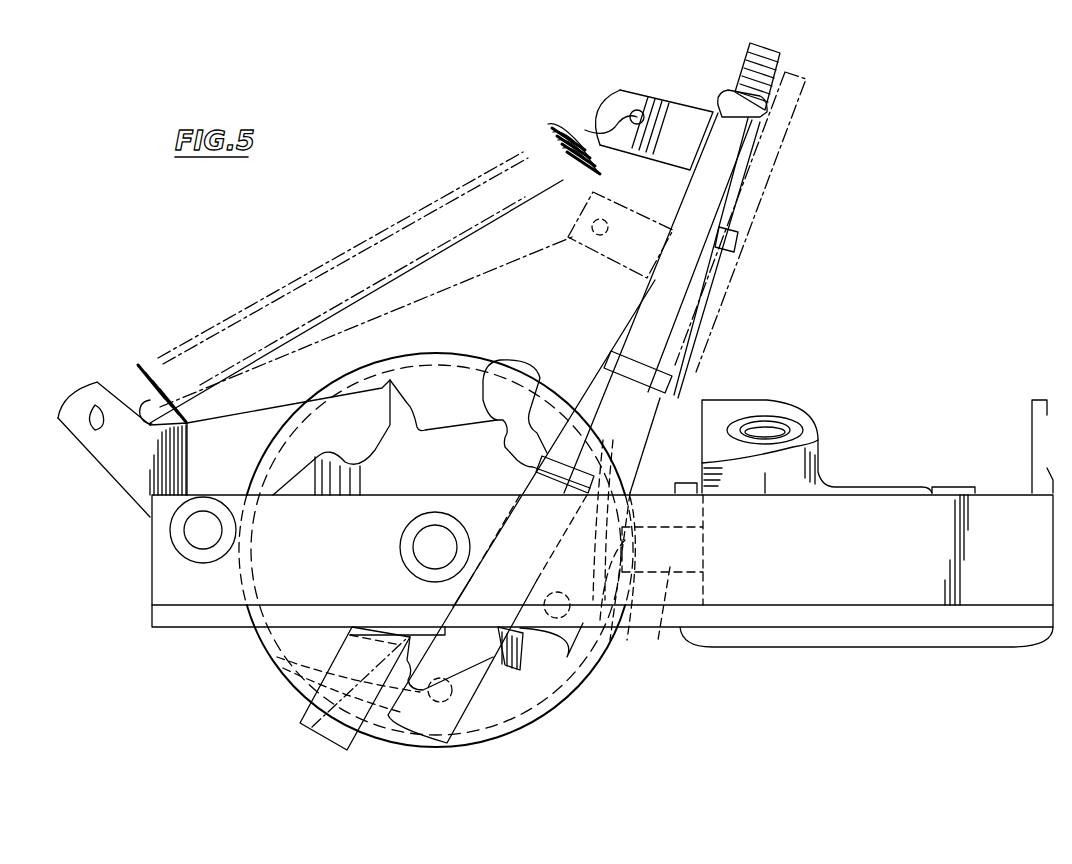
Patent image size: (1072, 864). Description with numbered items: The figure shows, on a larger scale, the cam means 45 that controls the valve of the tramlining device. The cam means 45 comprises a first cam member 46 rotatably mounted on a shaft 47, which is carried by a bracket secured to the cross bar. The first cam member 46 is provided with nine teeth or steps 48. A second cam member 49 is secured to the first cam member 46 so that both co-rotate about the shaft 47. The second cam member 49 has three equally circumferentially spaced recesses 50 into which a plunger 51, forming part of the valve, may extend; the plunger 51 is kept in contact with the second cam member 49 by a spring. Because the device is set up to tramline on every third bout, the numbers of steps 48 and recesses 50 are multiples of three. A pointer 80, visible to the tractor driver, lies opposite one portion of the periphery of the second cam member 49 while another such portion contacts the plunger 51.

The cam means 45 is at (298, 642).
The first cam member 46 is at (500, 365).
The shaft 47 is at (437, 540).
The teeth or steps 48 is at (548, 385).
The second cam member 49 is at (530, 695).
The recesses 50 is at (300, 685).
The plunger 51 is at (658, 640).
The pointer 80 is at (310, 733).